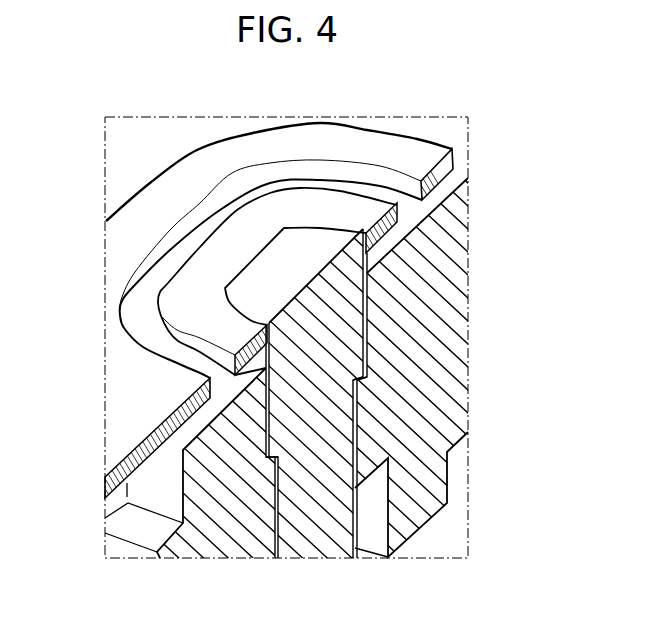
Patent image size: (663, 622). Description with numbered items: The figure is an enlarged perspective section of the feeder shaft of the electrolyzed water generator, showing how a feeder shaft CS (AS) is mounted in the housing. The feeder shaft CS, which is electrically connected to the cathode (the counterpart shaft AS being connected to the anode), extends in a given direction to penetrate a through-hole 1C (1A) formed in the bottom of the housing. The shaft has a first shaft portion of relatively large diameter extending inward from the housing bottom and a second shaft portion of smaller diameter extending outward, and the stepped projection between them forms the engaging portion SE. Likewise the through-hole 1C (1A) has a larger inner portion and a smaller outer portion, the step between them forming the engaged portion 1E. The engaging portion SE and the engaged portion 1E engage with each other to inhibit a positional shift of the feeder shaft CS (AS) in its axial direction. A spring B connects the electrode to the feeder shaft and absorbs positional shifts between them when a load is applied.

The spring B is at (200, 167).
The feeder shaft CS is at (331, 311).
The feeder shaft AS is at (323, 297).
The through-hole 1C is at (292, 311).
The through-hole 1A is at (365, 310).
The engaging portion SE is at (353, 362).
The engaged portion 1E is at (267, 468).